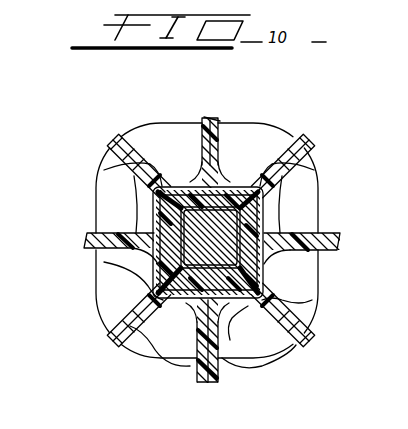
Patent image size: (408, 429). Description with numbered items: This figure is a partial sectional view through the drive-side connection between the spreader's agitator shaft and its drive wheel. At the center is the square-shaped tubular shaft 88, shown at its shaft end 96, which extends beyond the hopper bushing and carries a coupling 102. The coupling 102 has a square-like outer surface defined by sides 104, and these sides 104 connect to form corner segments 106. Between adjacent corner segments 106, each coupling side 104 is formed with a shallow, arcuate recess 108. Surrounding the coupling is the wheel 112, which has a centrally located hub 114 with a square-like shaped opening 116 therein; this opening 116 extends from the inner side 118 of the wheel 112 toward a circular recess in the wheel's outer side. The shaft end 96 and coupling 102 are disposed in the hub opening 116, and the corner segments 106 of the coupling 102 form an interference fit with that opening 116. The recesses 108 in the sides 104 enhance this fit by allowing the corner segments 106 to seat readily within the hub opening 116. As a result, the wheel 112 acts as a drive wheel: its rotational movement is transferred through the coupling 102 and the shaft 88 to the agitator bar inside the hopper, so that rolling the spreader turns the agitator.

The tubular shaft 88 is at (182, 300).
The shaft end 96 is at (258, 172).
The coupling 102 is at (157, 337).
The sides 104 is at (167, 184).
The corner segments 106 is at (140, 183).
The recess 108 is at (224, 200).
The wheel 112 is at (268, 348).
The hub 114 is at (225, 168).
The opening 116 is at (140, 257).
The inner side 118 is at (300, 336).